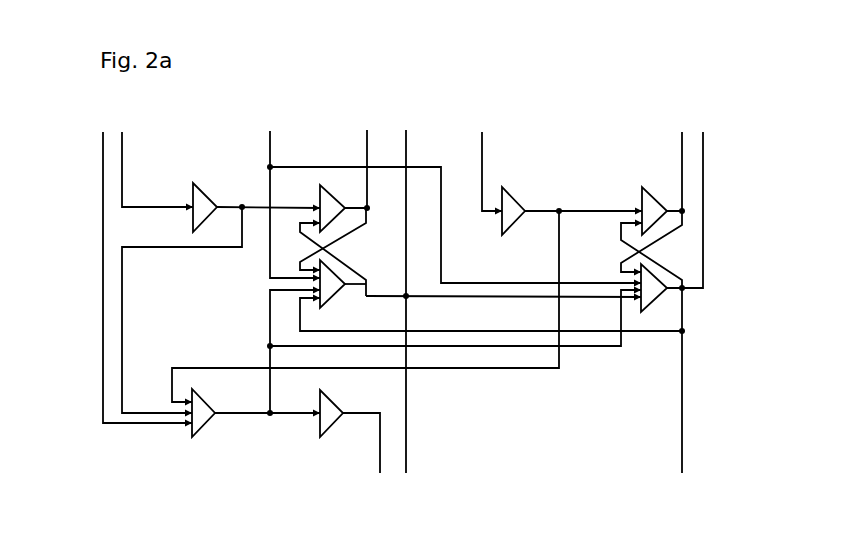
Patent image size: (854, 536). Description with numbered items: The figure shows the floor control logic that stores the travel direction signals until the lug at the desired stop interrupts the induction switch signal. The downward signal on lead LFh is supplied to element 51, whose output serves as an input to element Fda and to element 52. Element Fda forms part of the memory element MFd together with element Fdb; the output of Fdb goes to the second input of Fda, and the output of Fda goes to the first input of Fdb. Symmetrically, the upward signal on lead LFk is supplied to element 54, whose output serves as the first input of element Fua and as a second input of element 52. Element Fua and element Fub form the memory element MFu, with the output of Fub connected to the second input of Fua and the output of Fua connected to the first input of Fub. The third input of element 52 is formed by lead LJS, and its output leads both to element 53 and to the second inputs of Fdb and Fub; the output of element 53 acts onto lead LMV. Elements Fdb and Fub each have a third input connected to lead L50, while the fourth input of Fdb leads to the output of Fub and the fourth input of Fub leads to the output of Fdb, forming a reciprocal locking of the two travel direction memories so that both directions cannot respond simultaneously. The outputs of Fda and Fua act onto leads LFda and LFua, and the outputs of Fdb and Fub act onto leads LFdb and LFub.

The element 51 is at (203, 199).
The element 52 is at (204, 409).
The element 53 is at (332, 409).
The element 54 is at (511, 205).
The element Fda is at (332, 201).
The element Fdb is at (330, 291).
The memory element MFd is at (335, 252).
The element Fua is at (652, 204).
The element Fub is at (649, 295).
The memory element MFu is at (653, 249).
The lead LJS is at (138, 279).
The lead LFh is at (149, 171).
The lead L50 is at (446, 209).
The lead LFda is at (357, 170).
The lead LFdb is at (398, 301).
The lead LFk is at (483, 173).
The lead LFua is at (674, 172).
The lead LFub is at (683, 303).
The lead LMV is at (361, 443).